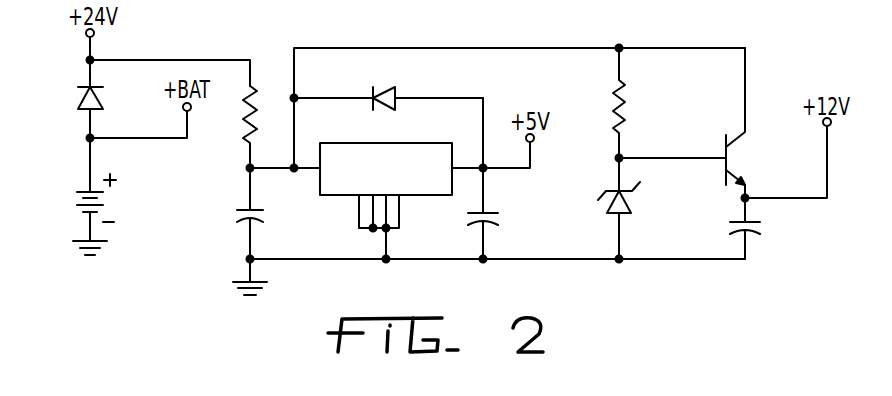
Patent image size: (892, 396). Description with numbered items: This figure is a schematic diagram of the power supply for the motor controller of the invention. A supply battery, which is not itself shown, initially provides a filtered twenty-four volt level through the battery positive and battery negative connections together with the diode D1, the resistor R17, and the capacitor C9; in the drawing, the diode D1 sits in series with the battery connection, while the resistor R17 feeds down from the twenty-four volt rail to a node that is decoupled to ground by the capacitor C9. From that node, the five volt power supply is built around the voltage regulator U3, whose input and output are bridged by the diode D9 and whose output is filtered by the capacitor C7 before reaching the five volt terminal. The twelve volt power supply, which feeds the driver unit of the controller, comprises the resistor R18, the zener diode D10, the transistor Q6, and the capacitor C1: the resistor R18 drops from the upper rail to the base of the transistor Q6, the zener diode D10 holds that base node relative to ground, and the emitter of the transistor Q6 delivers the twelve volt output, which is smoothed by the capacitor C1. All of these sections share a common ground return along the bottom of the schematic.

The diode D1 is at (75, 99).
The resistor R17 is at (228, 127).
The capacitor C9 is at (266, 213).
The diode D9 is at (388, 85).
The voltage regulator U3 is at (386, 201).
The capacitor C7 is at (499, 178).
The resistor R18 is at (644, 103).
The zener diode D10 is at (635, 208).
The transistor Q6 is at (755, 123).
The capacitor C1 is at (760, 228).